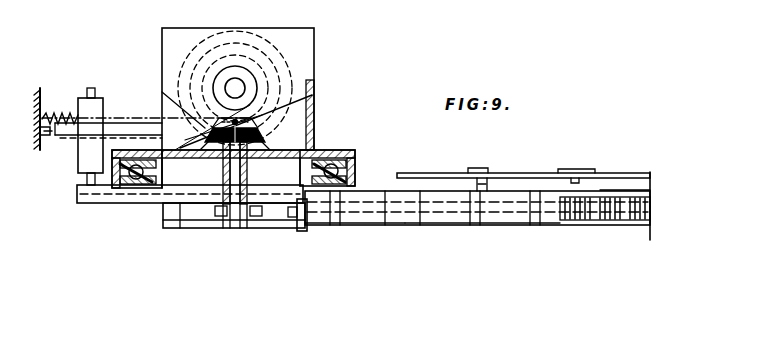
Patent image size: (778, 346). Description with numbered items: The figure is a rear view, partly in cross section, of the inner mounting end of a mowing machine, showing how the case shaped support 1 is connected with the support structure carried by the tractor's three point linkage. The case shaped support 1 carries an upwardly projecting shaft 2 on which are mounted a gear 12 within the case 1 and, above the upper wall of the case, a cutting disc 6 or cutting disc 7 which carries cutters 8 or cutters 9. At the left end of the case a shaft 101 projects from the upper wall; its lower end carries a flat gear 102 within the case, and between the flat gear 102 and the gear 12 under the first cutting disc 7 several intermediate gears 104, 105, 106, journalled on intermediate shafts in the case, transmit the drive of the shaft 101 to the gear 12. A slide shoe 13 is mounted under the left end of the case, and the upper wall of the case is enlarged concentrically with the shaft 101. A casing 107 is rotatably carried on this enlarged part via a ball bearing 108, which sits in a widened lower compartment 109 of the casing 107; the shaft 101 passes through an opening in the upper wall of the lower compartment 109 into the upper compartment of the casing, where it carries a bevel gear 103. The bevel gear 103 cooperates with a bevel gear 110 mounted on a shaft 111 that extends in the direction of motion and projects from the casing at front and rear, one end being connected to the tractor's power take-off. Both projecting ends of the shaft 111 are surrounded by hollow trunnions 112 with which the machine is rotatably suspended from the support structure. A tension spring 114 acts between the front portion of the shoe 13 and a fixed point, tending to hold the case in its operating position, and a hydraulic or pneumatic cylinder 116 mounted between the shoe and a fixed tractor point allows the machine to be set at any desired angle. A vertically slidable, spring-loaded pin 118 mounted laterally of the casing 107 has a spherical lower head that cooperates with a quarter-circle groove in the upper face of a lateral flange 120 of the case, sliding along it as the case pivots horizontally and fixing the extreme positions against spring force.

The case shaped support 1 is at (580, 226).
The upwardly projecting shaft 2 is at (492, 180).
The cutting disc 6 is at (614, 178).
The cutting disc 7 is at (422, 176).
The cutter 8 is at (581, 169).
The cutter 9 is at (478, 168).
The gear 12 is at (470, 226).
The slide shoe 13 is at (310, 222).
The shaft 101 is at (212, 200).
The flat gear 102 is at (255, 206).
The bevel gear 103 is at (306, 118).
The intermediate gear 104 is at (302, 231).
The intermediate gear 105 is at (345, 208).
The intermediate gear 106 is at (413, 208).
The casing 107 is at (300, 36).
The ball bearing 108 is at (140, 188).
The lower compartment 109 is at (330, 150).
The bevel gear 110 is at (296, 46).
The shaft 111 is at (240, 82).
The hollow trunnion 112 is at (220, 80).
The tension spring 114 is at (78, 104).
The hydraulic or pneumatic cylinder 116 is at (136, 122).
The pin 118 is at (86, 180).
The lateral flange 120 is at (78, 193).